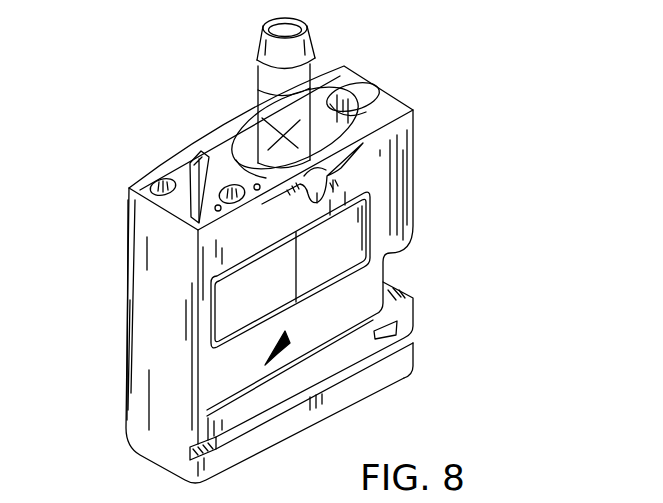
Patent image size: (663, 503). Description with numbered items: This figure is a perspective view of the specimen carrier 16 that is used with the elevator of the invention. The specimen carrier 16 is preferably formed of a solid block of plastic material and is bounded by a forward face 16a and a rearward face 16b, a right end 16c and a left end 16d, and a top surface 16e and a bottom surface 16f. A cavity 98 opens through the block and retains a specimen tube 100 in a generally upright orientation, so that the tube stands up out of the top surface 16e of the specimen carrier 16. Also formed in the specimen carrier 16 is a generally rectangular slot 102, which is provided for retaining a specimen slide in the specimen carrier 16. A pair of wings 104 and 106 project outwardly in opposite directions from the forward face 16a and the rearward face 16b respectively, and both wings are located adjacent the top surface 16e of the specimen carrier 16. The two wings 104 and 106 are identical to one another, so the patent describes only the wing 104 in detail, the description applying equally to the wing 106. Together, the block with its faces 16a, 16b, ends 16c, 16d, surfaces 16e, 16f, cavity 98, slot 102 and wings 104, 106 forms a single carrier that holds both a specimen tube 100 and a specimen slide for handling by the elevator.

The specimen carrier 16 is at (469, 174).
The forward face 16a is at (412, 236).
The rearward face 16b is at (124, 320).
The right end 16c is at (418, 198).
The left end 16d is at (152, 357).
The top surface 16e is at (346, 70).
The bottom surface 16f is at (272, 449).
The cavity 98 is at (356, 100).
The specimen tube 100 is at (280, 92).
The rectangular slot 102 is at (186, 162).
The wing 104 is at (345, 172).
The wing 106 is at (240, 118).